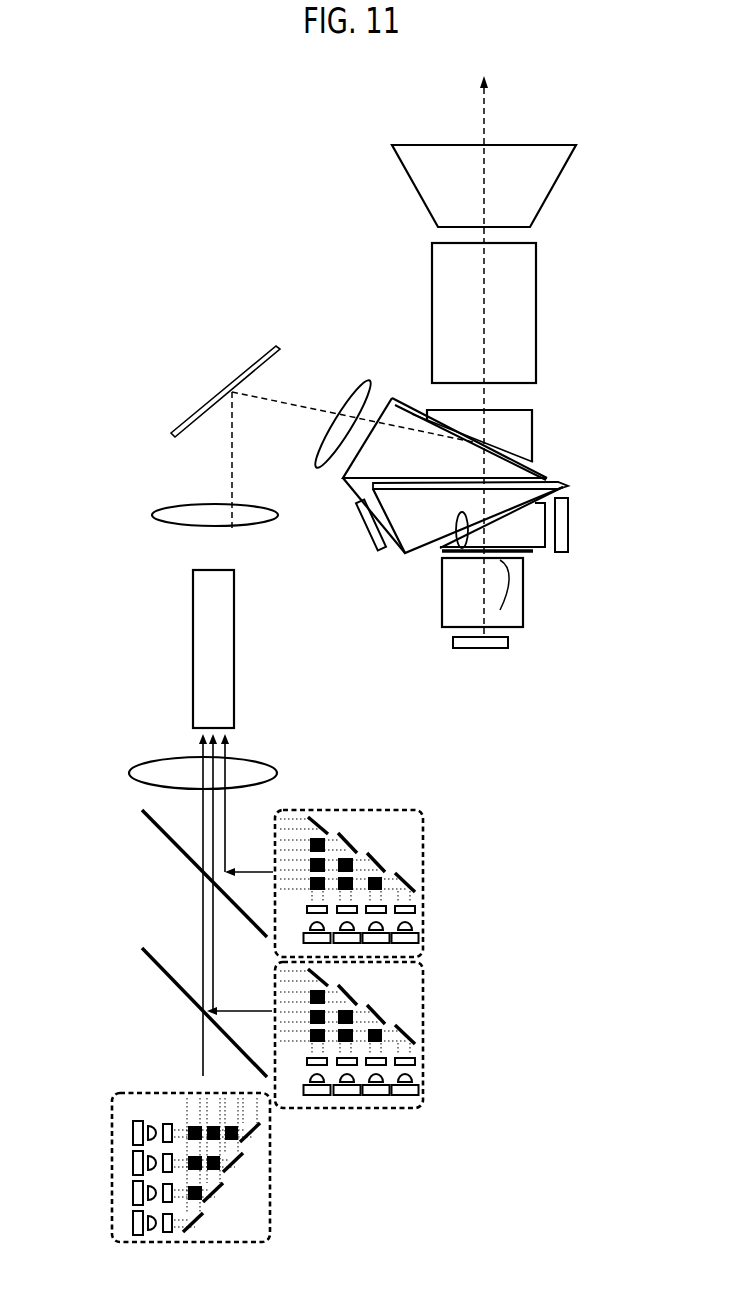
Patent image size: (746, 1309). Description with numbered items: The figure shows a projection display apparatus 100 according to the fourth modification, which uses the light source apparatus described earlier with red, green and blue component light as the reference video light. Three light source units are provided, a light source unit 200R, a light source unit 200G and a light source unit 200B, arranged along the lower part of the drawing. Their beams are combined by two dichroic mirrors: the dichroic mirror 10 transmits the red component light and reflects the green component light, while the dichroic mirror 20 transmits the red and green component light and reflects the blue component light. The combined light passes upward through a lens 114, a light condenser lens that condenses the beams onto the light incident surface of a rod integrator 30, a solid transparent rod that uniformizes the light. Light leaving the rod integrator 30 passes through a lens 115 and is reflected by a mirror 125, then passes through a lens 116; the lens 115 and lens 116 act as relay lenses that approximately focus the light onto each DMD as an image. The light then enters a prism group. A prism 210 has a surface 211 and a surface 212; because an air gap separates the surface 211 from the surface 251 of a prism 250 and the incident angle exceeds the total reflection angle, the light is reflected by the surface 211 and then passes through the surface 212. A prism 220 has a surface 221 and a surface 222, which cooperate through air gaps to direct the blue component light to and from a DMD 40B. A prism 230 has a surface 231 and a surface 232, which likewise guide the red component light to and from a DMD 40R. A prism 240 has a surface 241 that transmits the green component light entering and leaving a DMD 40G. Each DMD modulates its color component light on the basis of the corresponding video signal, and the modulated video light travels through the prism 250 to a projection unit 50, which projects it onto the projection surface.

The projection display apparatus 100 is at (567, 112).
The projection unit 50 is at (522, 286).
The lens 116 is at (356, 383).
The surface 211 is at (394, 395).
The prism 210 is at (359, 468).
The prism 250 is at (525, 420).
The surface 251 is at (502, 447).
The mirror 125 is at (199, 407).
The lens 115 is at (155, 513).
The surface 212 is at (358, 500).
The DMD 40B is at (363, 533).
The prism 220 is at (560, 487).
The surface 221 is at (552, 480).
The surface 222 is at (420, 554).
The DMD 40R is at (570, 523).
The prism 230 is at (527, 543).
The surface 232 is at (528, 553).
The surface 231 is at (455, 556).
The prism 240 is at (515, 627).
The surface 241 is at (505, 560).
The DMD 40G is at (480, 652).
The rod integrator 30 is at (197, 655).
The lens 114 is at (129, 775).
The dichroic mirror 20 is at (182, 855).
The dichroic mirror 10 is at (162, 973).
The light source unit 200B is at (433, 862).
The light source unit 200G is at (433, 1030).
The light source unit 200R is at (275, 1192).